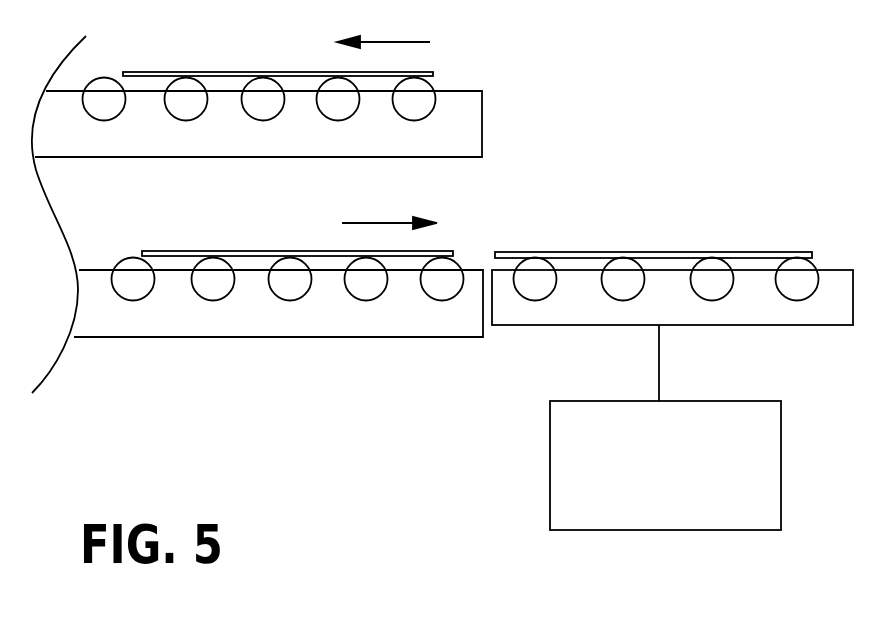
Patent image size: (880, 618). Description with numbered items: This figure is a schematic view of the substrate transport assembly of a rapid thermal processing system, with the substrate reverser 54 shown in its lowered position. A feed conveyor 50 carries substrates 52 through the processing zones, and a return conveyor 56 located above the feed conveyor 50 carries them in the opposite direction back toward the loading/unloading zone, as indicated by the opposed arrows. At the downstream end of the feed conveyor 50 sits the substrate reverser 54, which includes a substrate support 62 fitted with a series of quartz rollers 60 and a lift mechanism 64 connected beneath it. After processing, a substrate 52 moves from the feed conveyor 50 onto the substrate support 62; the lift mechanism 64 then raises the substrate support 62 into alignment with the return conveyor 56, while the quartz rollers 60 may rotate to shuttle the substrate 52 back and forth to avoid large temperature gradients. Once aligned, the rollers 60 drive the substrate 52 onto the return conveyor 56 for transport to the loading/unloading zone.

The feed conveyor 50 is at (268, 318).
The substrate 52 is at (283, 72).
The substrate reverser 54 is at (638, 394).
The return conveyor 56 is at (370, 135).
The quartz rollers 60 is at (535, 300).
The substrate support 62 is at (783, 315).
The lift mechanism 64 is at (550, 472).